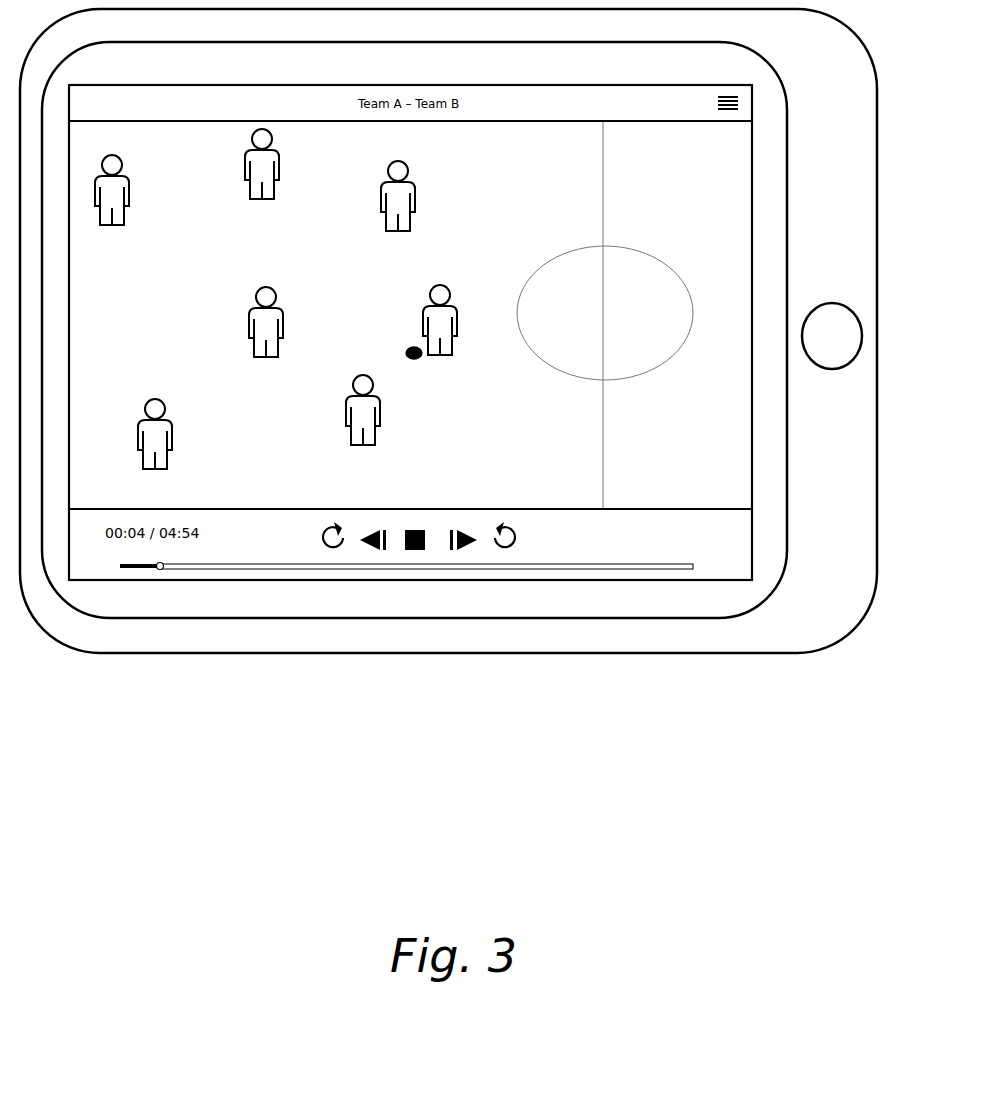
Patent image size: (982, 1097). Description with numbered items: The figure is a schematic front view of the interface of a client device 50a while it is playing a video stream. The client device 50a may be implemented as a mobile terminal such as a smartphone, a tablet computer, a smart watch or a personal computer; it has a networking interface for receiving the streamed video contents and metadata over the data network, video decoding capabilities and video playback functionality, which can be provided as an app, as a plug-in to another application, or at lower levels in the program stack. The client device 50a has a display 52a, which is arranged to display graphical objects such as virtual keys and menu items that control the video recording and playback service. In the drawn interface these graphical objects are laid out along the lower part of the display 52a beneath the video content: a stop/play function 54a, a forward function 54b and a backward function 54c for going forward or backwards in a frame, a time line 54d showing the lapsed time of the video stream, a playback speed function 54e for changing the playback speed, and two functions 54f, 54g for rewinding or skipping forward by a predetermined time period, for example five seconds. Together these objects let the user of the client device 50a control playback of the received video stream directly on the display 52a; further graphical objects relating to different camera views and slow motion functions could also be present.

The client device 50a is at (822, 640).
The display 52a is at (723, 606).
The stop/play function 54a is at (421, 550).
The forward function 54b is at (466, 548).
The backward function 54c is at (381, 550).
The time line 54d is at (143, 568).
The playback speed function 54e is at (717, 543).
The rewinding function 54f is at (333, 550).
The skipping forward function 54g is at (505, 550).